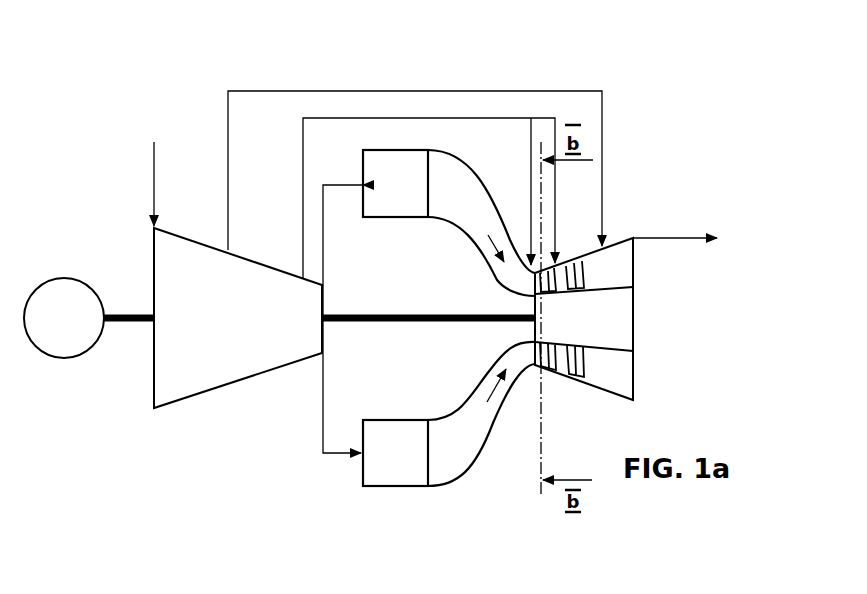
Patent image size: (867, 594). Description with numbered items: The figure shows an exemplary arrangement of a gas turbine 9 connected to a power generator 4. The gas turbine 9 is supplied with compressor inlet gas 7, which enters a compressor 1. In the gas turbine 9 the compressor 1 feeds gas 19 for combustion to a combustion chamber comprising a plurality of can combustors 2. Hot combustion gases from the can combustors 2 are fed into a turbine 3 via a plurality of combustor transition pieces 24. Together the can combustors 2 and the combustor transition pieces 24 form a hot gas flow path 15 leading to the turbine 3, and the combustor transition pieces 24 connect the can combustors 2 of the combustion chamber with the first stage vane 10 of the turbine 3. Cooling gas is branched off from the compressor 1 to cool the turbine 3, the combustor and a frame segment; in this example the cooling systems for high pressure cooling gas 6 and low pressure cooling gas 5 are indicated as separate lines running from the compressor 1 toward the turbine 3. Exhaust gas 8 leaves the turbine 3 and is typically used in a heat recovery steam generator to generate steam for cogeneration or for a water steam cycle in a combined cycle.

The compressor 1 is at (225, 330).
The can combustor 2 is at (389, 460).
The turbine 3 is at (579, 330).
The power generator 4 is at (57, 330).
The low pressure cooling gas 5 is at (420, 91).
The high pressure cooling gas 6 is at (472, 118).
The compressor inlet gas 7 is at (152, 165).
The exhaust gas 8 is at (683, 238).
The gas turbine 9 is at (193, 505).
The first stage vane 10 is at (555, 366).
The hot gas flow path 15 is at (498, 395).
The gas for combustion 19 is at (325, 377).
The combustor transition piece 24 is at (472, 427).